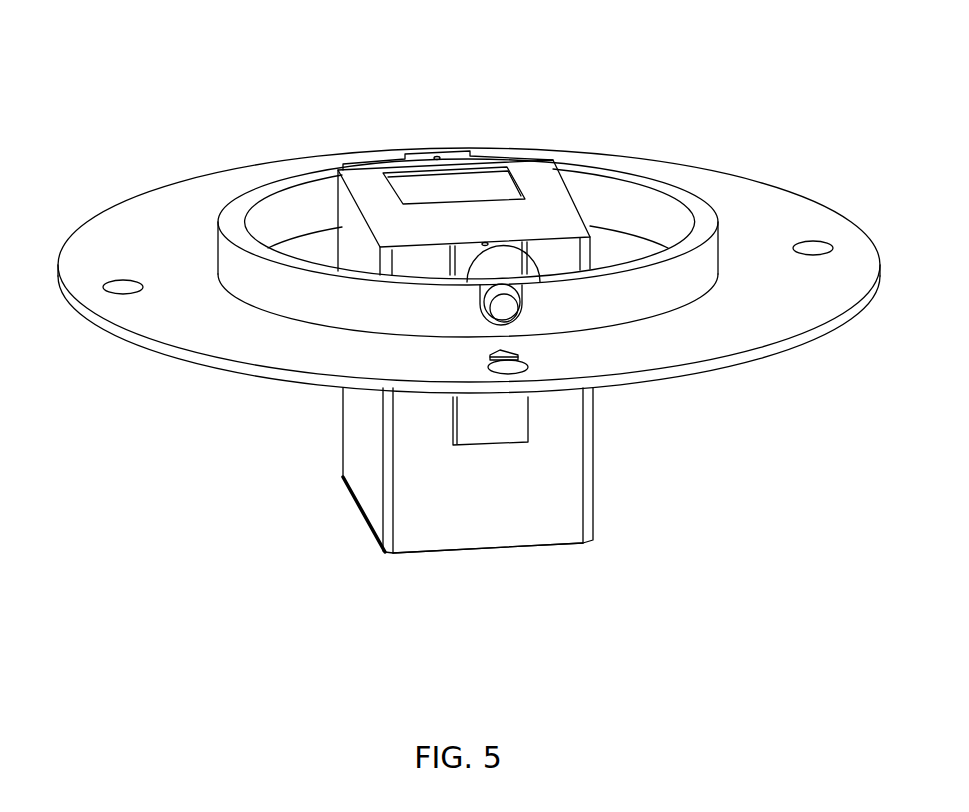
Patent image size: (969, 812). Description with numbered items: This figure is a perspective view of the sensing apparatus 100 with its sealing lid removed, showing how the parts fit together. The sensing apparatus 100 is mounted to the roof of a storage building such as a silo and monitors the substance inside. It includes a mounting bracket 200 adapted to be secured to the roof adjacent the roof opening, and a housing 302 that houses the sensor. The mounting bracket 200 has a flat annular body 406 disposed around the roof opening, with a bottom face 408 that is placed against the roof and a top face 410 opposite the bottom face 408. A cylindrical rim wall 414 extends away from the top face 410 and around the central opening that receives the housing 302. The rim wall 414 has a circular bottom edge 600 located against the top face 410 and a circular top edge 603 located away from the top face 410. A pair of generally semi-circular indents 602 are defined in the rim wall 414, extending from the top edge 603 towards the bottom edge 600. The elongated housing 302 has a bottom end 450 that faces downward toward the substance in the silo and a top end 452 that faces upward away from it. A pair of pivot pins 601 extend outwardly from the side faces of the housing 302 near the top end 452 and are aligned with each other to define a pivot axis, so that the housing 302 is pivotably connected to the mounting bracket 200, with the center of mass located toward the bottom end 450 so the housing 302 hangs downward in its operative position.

The sensing apparatus 100 is at (170, 70).
The mounting bracket 200 is at (133, 149).
The housing 302 is at (626, 482).
The flat annular body 406 is at (769, 218).
The bottom face 408 is at (98, 340).
The top face 410 is at (78, 256).
The cylindrical rim wall 414 is at (685, 174).
The bottom end 450 is at (560, 576).
The top end 452 is at (534, 136).
The circular bottom edge 600 is at (243, 302).
The pivot pins 601 is at (489, 278).
The semi-circular indents 602 is at (536, 313).
The circular top edge 603 is at (267, 190).